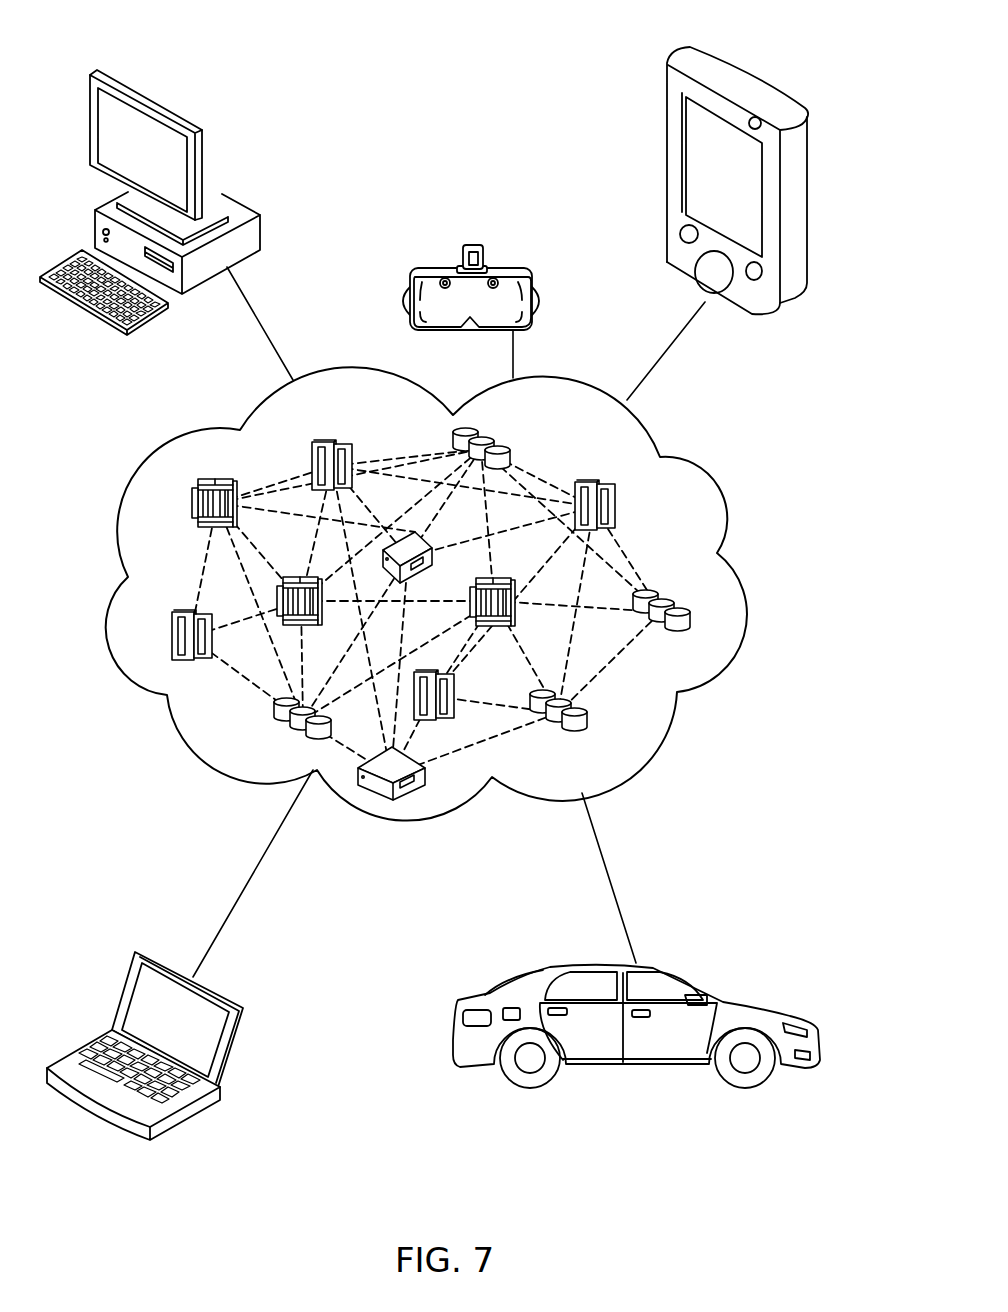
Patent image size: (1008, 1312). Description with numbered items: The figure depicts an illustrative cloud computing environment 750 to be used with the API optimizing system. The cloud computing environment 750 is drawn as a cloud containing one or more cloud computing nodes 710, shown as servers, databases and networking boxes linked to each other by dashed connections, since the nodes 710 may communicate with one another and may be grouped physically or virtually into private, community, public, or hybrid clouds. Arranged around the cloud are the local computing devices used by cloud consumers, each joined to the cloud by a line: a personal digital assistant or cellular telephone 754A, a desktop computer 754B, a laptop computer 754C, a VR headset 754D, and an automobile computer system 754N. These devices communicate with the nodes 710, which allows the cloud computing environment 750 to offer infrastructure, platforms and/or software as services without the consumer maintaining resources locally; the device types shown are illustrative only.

The personal digital assistant (PDA) or cellular telephone 754A is at (665, 127).
The desktop computer 754B is at (265, 230).
The laptop computer 754C is at (247, 1017).
The VR headset 754D is at (483, 253).
The automobile computer system 754N is at (818, 1028).
The cloud computing nodes 710 is at (660, 528).
The cloud computing environment 750 is at (718, 673).